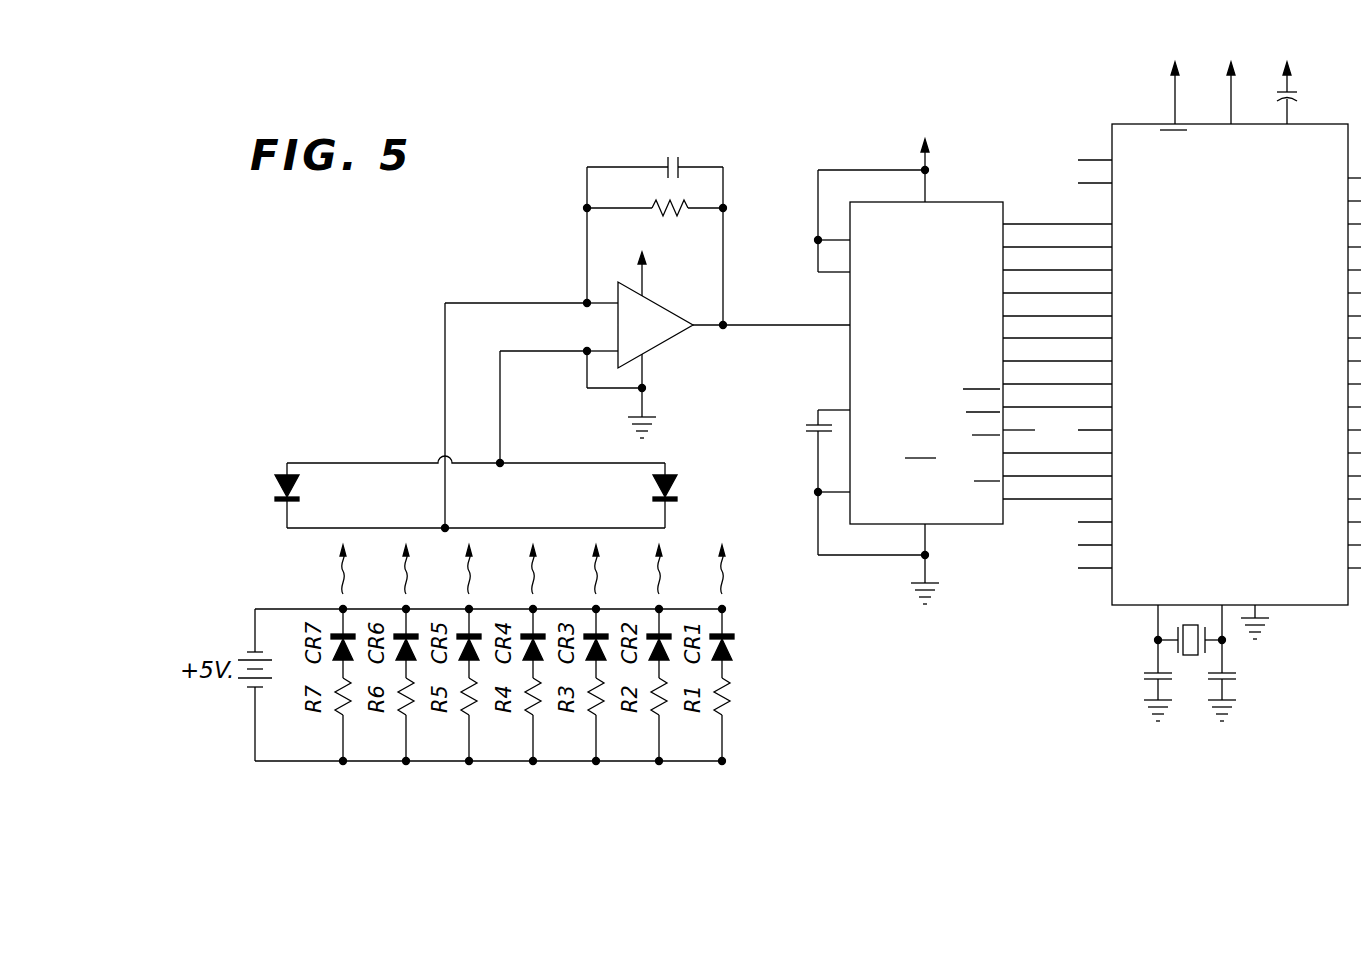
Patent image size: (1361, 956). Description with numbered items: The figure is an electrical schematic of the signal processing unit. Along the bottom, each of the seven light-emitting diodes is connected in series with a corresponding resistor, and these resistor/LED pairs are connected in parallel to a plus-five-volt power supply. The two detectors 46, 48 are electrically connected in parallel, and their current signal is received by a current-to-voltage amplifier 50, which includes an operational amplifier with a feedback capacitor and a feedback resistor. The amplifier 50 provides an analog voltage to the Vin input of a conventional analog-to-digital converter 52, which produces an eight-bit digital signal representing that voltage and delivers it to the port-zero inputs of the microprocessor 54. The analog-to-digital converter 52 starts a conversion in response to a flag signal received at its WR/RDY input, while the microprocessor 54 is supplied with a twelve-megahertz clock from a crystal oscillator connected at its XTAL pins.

The detector 46 is at (299, 485).
The detector 48 is at (653, 488).
The current-to-voltage amplifier 50 is at (726, 130).
The analog-to-digital converter 52 is at (977, 130).
The microprocessor 54 is at (1055, 642).